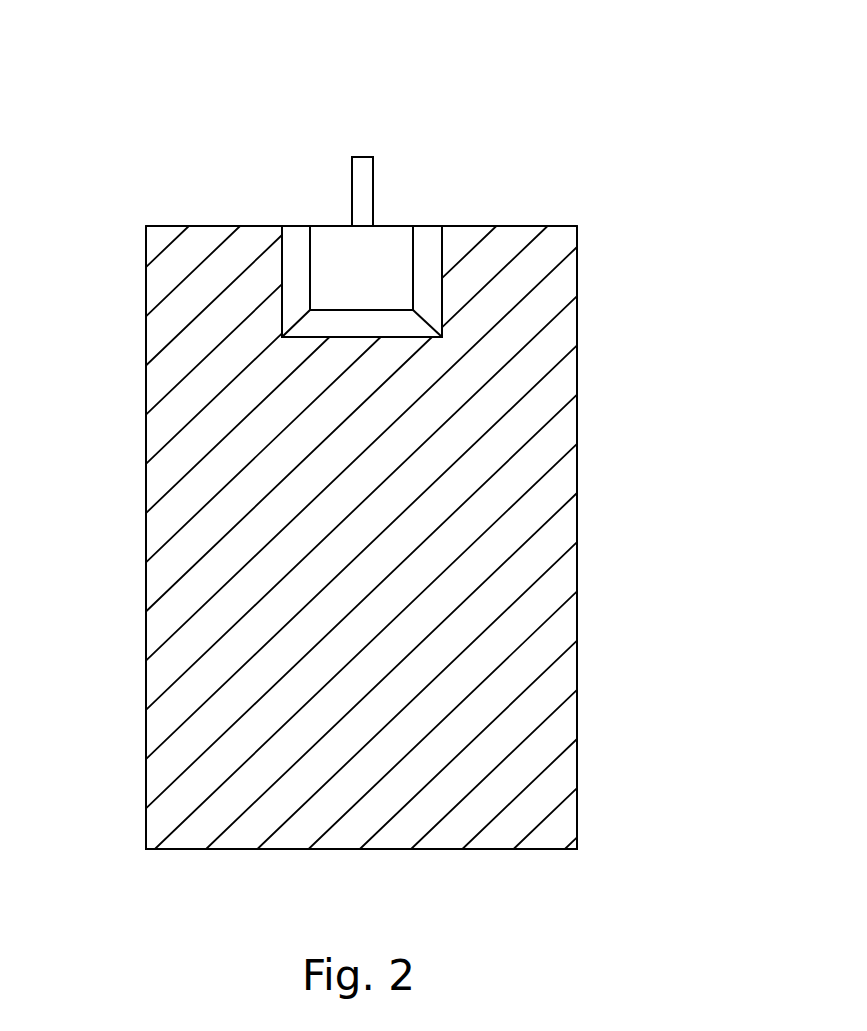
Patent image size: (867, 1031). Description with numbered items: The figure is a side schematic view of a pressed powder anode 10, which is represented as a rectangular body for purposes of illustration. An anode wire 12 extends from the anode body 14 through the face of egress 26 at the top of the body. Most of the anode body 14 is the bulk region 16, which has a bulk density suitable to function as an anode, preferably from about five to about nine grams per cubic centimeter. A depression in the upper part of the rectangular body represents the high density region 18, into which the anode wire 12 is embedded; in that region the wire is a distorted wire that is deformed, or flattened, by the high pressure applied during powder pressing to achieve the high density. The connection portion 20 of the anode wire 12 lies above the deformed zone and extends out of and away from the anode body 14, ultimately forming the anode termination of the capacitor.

The pressed powder anode 10 is at (186, 183).
The anode wire 12 is at (392, 182).
The anode body 14 is at (577, 515).
The bulk region 16 is at (198, 497).
The high density region 18 is at (367, 270).
The connection portion 20 is at (362, 192).
The face of egress 26 is at (520, 226).